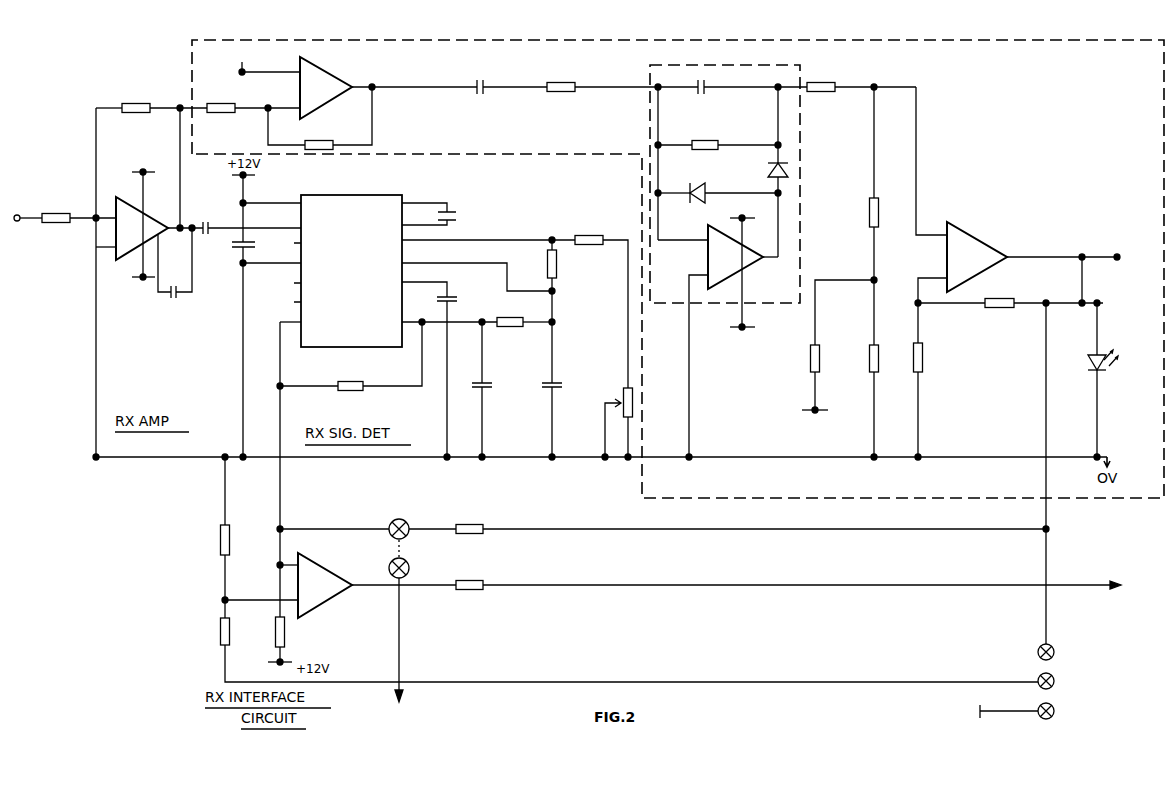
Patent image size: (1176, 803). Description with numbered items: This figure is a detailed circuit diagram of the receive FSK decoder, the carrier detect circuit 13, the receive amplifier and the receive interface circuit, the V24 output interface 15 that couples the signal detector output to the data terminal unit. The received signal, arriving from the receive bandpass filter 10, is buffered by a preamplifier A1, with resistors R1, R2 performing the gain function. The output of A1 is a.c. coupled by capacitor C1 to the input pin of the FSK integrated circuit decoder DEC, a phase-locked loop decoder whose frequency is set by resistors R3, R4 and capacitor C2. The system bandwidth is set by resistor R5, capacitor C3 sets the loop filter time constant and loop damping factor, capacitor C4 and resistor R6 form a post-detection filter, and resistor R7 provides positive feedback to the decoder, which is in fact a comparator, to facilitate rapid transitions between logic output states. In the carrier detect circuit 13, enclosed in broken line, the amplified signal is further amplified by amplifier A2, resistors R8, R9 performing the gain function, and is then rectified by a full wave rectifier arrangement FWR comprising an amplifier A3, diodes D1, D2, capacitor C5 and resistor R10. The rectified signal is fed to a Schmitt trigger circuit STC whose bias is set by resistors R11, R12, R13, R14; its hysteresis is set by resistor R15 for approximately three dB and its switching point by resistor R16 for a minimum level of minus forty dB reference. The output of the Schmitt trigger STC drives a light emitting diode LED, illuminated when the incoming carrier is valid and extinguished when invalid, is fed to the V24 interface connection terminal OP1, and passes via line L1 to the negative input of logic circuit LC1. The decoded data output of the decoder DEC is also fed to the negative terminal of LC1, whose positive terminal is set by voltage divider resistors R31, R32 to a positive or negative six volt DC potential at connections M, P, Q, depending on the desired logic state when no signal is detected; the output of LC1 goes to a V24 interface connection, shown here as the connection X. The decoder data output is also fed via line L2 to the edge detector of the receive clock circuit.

The resistor R1 is at (68, 210).
The resistor R2 is at (151, 100).
The preamplifier A1 is at (144, 227).
The capacitor C1 is at (249, 217).
The FSK integrated circuit decoder DEC is at (348, 271).
The capacitor C2 is at (436, 211).
The capacitor C3 is at (558, 374).
The capacitor C4 is at (473, 389).
The resistor R3 is at (515, 303).
The resistor R4 is at (615, 417).
The resistor R5 is at (538, 265).
The resistor R6 is at (477, 315).
The resistor R7 is at (351, 356).
The resistor R8 is at (253, 100).
The resistor R9 is at (320, 118).
The amplifier A2 is at (295, 88).
The resistor R16 is at (590, 79).
The capacitor C5 is at (752, 81).
The resistor R10 is at (718, 138).
The diode D1 is at (769, 172).
The diode D2 is at (718, 185).
The amplifier A3 is at (733, 329).
The full wave rectifier arrangement FWR is at (855, 150).
The resistor R11 is at (860, 79).
The resistor R12 is at (889, 216).
The resistor R13 is at (827, 356).
The resistor R14 is at (857, 401).
The resistor R15 is at (1010, 295).
The Schmitt trigger circuit STC is at (962, 282).
The V24 interface connection terminal OP1 is at (1066, 268).
The light emitting diode LED is at (1085, 380).
The carrier detect circuit 13 is at (904, 489).
The V24 output interface 15 is at (1119, 297).
The receive bandpass filter 10 is at (66, 249).
The voltage divider resistor R31 is at (613, 650).
The voltage divider resistor R32 is at (209, 537).
The logic circuit LC1 is at (316, 585).
The line L1 is at (673, 473).
The line L2 is at (399, 632).
The connection X to FIG. 6 X is at (739, 605).
The potential connection M is at (1054, 653).
The potential connection P is at (1052, 682).
The potential connection Q is at (1001, 712).